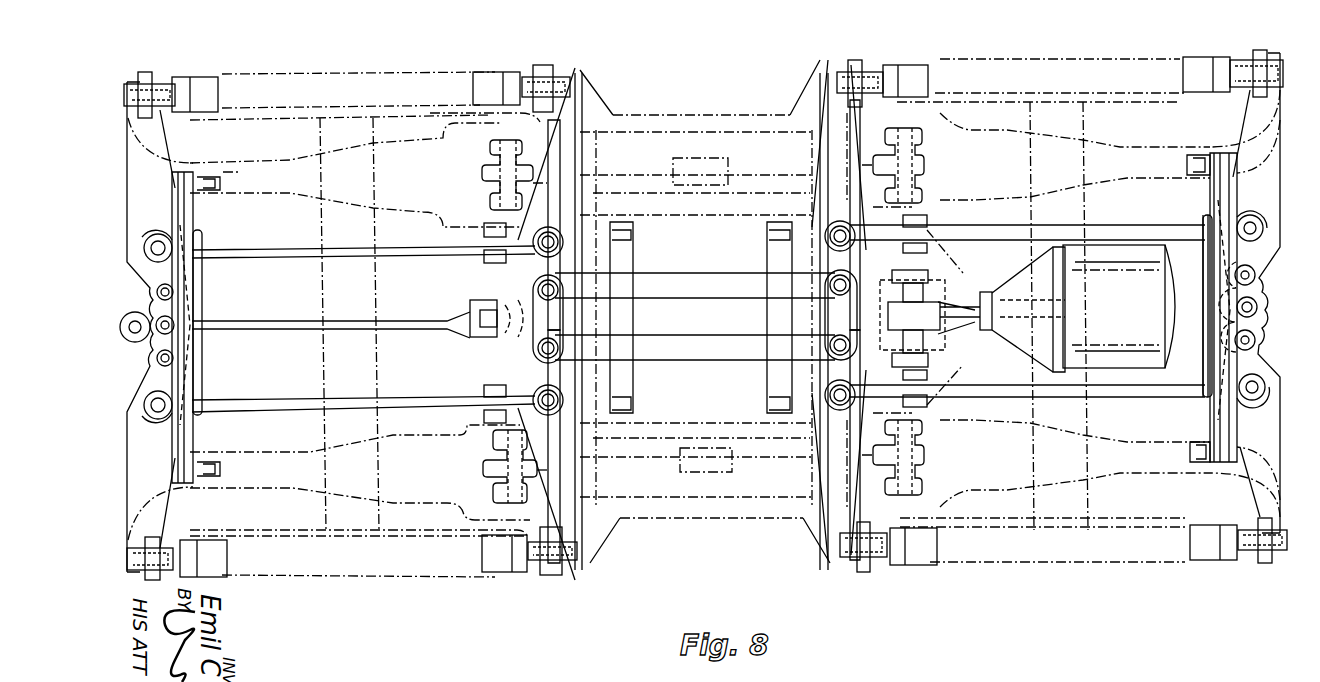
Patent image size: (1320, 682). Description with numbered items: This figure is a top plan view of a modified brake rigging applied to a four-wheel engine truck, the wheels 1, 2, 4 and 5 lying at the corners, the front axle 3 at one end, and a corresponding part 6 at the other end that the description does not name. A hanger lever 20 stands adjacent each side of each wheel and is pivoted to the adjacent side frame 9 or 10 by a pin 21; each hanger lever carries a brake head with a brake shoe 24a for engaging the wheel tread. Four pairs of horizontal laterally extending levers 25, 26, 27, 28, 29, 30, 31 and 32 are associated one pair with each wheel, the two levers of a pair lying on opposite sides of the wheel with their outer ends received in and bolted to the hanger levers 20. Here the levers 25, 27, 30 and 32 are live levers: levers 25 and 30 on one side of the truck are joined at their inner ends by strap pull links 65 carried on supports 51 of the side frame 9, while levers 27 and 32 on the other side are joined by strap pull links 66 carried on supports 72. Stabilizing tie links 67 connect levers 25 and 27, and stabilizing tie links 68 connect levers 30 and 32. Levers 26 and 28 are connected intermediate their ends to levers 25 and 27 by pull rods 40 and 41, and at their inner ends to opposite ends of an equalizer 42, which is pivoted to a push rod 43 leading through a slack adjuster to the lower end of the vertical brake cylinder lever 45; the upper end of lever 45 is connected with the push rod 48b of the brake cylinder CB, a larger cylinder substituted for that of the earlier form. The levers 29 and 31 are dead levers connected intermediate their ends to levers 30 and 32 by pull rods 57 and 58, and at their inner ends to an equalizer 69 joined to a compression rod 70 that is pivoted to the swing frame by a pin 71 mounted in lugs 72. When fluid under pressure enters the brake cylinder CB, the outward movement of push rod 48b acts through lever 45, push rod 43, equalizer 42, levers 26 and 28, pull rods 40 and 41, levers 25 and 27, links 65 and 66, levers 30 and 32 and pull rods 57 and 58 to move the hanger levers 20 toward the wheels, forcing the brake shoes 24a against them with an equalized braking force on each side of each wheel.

The wheel 1 is at (1068, 572).
The wheel 2 is at (1055, 68).
The front axle 3 is at (1040, 458).
The wheel 4 is at (360, 572).
The wheel 5 is at (348, 78).
The side frame member 6 is at (337, 508).
The side frame 9 is at (706, 524).
The side frame 10 is at (710, 122).
The hanger lever 20 is at (148, 84).
The pin 21 is at (142, 80).
The brake shoe 24a is at (200, 82).
The horizontal lever 25 is at (845, 478).
The horizontal lever 26 is at (1258, 495).
The horizontal lever 27 is at (830, 157).
The horizontal lever 28 is at (1245, 118).
The horizontal lever 29 is at (150, 503).
The horizontal lever 30 is at (568, 478).
The horizontal lever 31 is at (150, 145).
The horizontal lever 32 is at (565, 162).
The pull rod 40 is at (1140, 392).
The pull rod 41 is at (1188, 227).
The equalizer 42 is at (1255, 322).
The push rod 43 is at (1193, 320).
The brake cylinder lever 45 is at (888, 320).
The push rod 48b is at (982, 295).
The support 51 is at (770, 385).
The pull rod 57 is at (300, 410).
The pull rod 58 is at (305, 248).
The strap pull link 65 is at (712, 330).
The strap pull link 66 is at (708, 280).
The stabilizing tie link 67 is at (830, 320).
The stabilizing tie link 68 is at (560, 320).
The equalizer 69 is at (150, 340).
The compression rod 70 is at (280, 325).
The pin 71 is at (478, 310).
The support 72 is at (770, 248).
The brake cylinder CB is at (1115, 265).